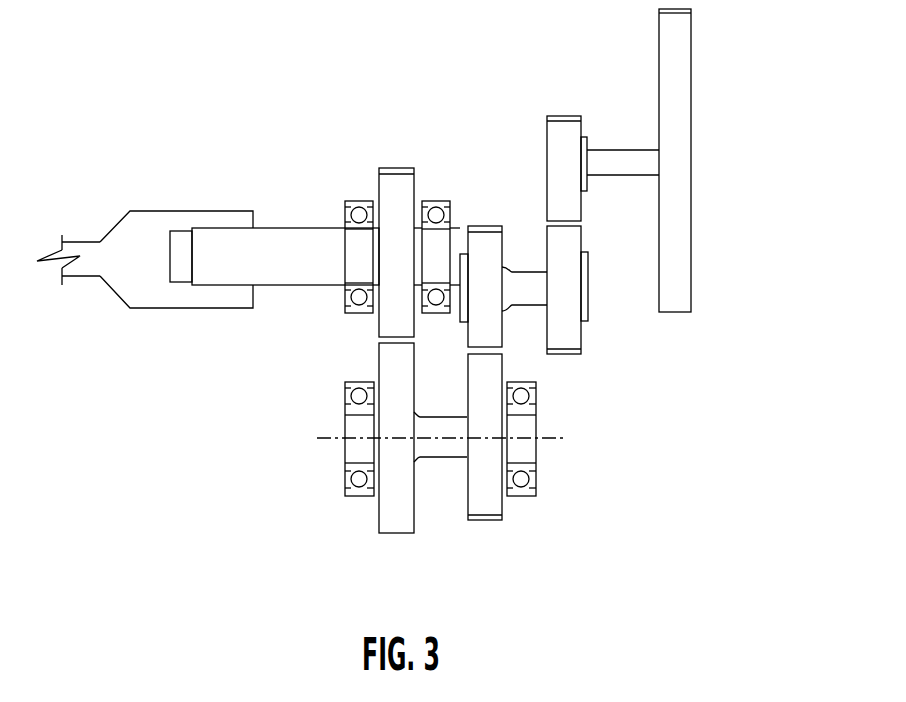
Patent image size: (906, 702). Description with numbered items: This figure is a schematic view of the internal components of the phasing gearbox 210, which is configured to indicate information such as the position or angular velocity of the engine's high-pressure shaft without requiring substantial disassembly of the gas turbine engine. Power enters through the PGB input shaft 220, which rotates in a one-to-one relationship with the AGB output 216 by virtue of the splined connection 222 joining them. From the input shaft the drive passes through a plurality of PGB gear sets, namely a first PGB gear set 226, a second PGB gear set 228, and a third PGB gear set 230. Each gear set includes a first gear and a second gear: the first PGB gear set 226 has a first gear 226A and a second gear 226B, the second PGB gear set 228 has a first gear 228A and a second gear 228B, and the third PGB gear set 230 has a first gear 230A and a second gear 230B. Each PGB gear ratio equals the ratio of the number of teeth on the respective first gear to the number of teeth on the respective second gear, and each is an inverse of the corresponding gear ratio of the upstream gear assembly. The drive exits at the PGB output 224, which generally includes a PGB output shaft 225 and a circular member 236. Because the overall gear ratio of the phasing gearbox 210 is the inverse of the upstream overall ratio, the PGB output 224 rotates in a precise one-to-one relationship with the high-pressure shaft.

The phasing gearbox 210 is at (287, 110).
The AGB output 216 is at (88, 250).
The PGB input shaft 220 is at (280, 237).
The splined connection 222 is at (202, 326).
The PGB output 224 is at (700, 150).
The PGB output shaft 225 is at (618, 167).
The first PGB gear set 226 is at (388, 150).
The first gear of the first PGB gear set 226A is at (388, 192).
The second gear of the first PGB gear set 226B is at (388, 512).
The second PGB gear set 228 is at (498, 534).
The first gear of the second PGB gear set 228A is at (475, 494).
The second gear of the second PGB gear set 228B is at (485, 240).
The third PGB gear set 230 is at (563, 100).
The first gear of the third PGB gear set 230A is at (575, 337).
The second gear of the third PGB gear set 230B is at (568, 144).
The circular member 236 is at (685, 362).